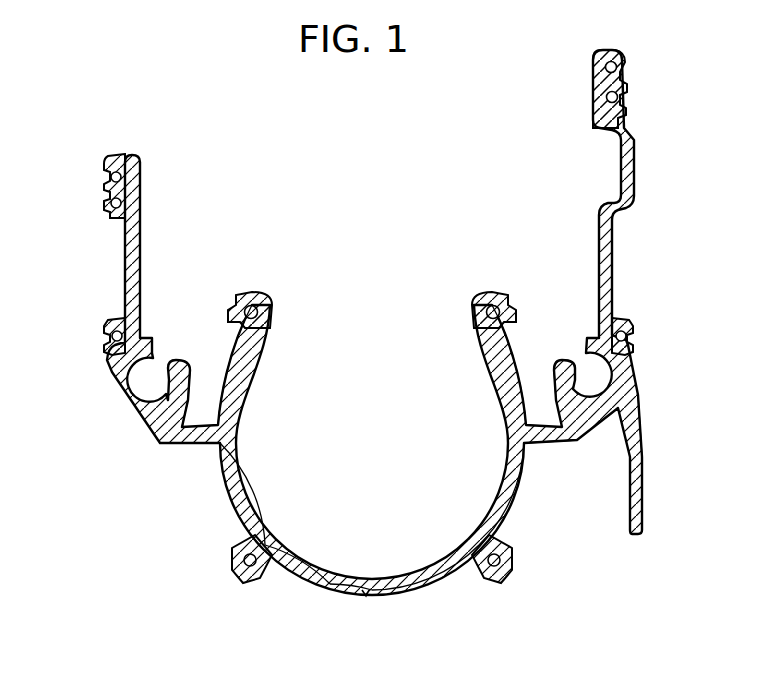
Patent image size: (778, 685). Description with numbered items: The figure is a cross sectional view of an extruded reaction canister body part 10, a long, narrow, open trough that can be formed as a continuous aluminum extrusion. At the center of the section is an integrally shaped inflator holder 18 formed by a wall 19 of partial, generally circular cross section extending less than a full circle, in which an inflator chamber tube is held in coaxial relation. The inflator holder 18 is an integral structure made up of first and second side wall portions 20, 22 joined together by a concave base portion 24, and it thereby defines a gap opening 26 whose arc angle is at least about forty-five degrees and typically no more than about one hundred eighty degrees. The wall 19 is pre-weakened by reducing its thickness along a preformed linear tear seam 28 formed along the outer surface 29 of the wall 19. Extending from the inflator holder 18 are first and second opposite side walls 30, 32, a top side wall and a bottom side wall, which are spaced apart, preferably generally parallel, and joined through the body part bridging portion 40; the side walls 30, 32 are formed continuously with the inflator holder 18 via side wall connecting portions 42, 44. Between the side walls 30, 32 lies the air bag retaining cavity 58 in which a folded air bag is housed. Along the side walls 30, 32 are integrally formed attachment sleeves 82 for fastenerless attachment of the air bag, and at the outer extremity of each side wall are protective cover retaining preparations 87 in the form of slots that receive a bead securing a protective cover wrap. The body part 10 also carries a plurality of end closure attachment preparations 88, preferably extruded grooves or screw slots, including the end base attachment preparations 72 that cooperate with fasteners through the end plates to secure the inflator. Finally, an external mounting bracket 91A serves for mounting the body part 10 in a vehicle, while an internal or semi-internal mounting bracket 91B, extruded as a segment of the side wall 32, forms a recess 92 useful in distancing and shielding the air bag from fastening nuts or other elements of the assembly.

The reaction canister body part 10 is at (372, 335).
The inflator holder 18 is at (309, 578).
The wall 19 is at (237, 484).
The first side wall portion 20 is at (241, 405).
The second side wall portion 22 is at (500, 405).
The concave base portion 24 is at (340, 591).
The gap opening 26 is at (372, 332).
The tear seam 28 is at (368, 596).
The outer surface 29 is at (455, 578).
The first side wall 30 is at (128, 156).
The second side wall 32 is at (614, 50).
The body part bridging portion 40 is at (487, 506).
The first side wall connecting portion 42 is at (196, 446).
The second side wall connecting portion 44 is at (540, 444).
The air bag retaining cavity 58 is at (372, 197).
The end base attachment preparations 72 is at (260, 298).
The attachment sleeves 82 is at (186, 366).
The protective cover retaining preparations 87 is at (108, 203).
The end closure attachment preparations 88 is at (108, 176).
The mounting bracket 91A is at (640, 480).
The mounting bracket 91B is at (636, 180).
The recess 92 is at (600, 175).